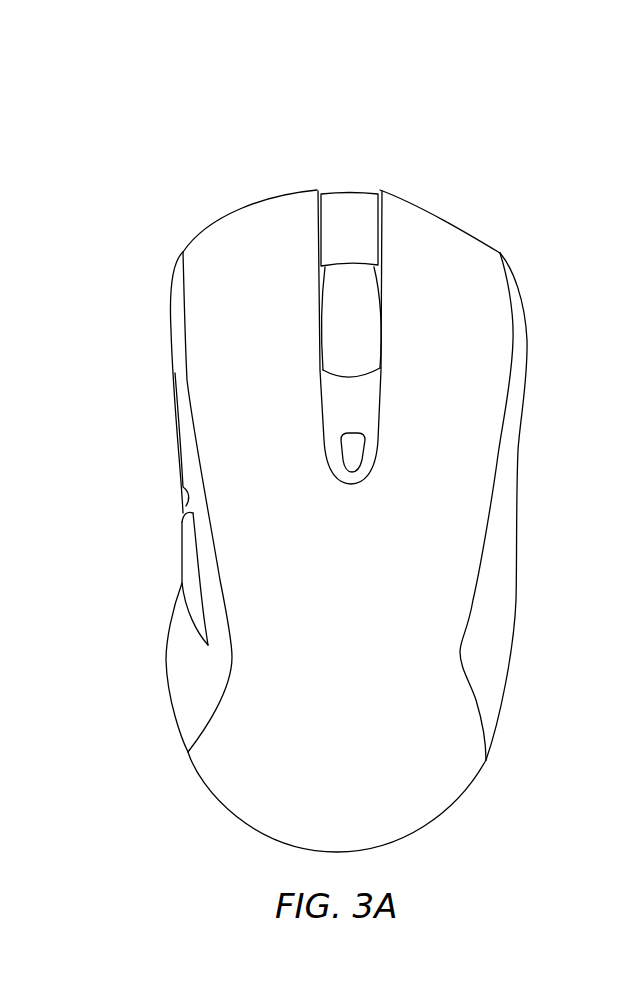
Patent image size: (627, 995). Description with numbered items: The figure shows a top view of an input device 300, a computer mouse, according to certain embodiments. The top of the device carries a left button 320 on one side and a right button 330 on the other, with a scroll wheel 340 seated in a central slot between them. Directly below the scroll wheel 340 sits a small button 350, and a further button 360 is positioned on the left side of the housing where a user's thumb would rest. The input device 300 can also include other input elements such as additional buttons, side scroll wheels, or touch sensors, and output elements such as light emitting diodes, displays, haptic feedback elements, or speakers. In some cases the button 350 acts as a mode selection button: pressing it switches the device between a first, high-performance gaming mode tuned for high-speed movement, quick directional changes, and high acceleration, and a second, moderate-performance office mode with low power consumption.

The input device 300 is at (128, 135).
The left button 320 is at (252, 255).
The right button 330 is at (447, 268).
The scroll wheel 340 is at (348, 288).
The button 350 is at (355, 448).
The button 360 is at (186, 536).